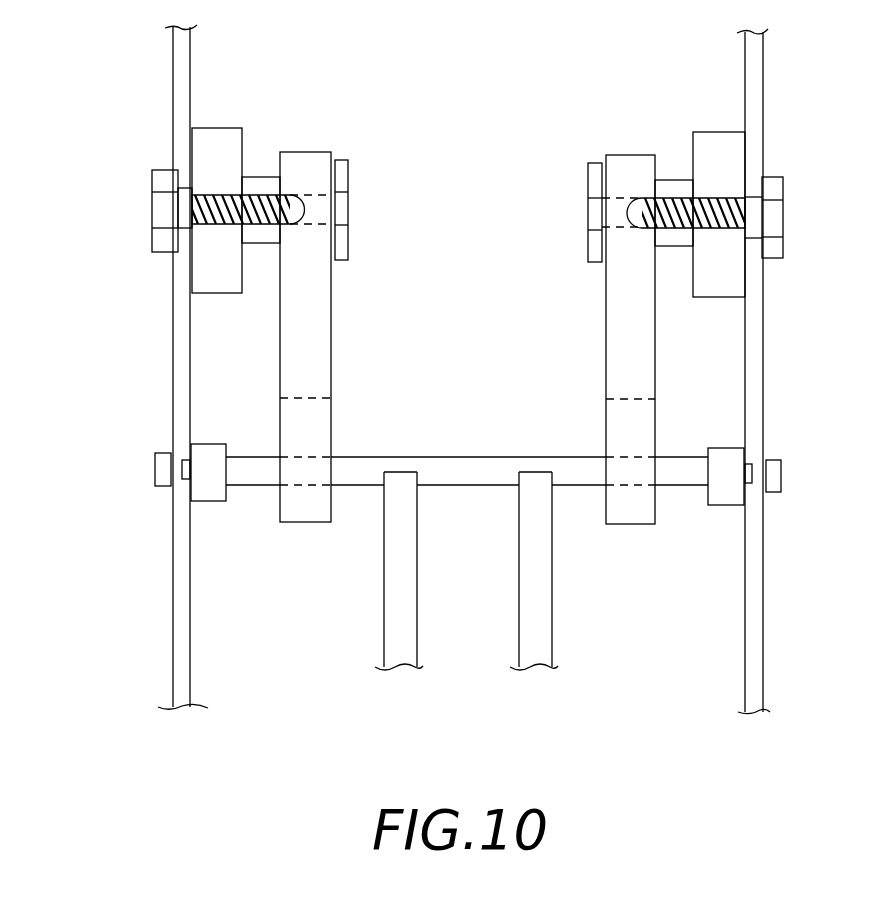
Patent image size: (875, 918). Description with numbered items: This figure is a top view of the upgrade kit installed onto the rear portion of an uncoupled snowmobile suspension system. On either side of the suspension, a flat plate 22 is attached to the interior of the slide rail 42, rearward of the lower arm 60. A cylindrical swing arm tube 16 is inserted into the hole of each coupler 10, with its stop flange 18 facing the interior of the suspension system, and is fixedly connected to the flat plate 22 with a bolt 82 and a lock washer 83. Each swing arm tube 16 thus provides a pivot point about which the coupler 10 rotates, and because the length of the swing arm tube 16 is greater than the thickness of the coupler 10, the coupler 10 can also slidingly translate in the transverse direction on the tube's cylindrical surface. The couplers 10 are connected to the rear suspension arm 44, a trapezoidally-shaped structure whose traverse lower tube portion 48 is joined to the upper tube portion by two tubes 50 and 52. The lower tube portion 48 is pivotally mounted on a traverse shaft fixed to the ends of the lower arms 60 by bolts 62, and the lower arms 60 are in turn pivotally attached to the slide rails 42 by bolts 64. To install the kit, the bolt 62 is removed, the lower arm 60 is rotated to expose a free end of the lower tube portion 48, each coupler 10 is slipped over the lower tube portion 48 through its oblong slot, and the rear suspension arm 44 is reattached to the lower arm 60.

The coupler 10 is at (317, 375).
The swing arm tube 16 is at (258, 183).
The stop flange 18 is at (345, 176).
The flat plate 22 is at (217, 140).
The slide rail 42 is at (185, 78).
The rear suspension arm 44 is at (384, 564).
The lower tube portion 48 is at (477, 477).
The tube 50 is at (540, 633).
The tube 52 is at (397, 638).
The lower arm 60 is at (210, 488).
The bolt 62 is at (183, 467).
The bolt 64 is at (153, 473).
The bolt 82 is at (157, 212).
The lock washer 83 is at (185, 228).